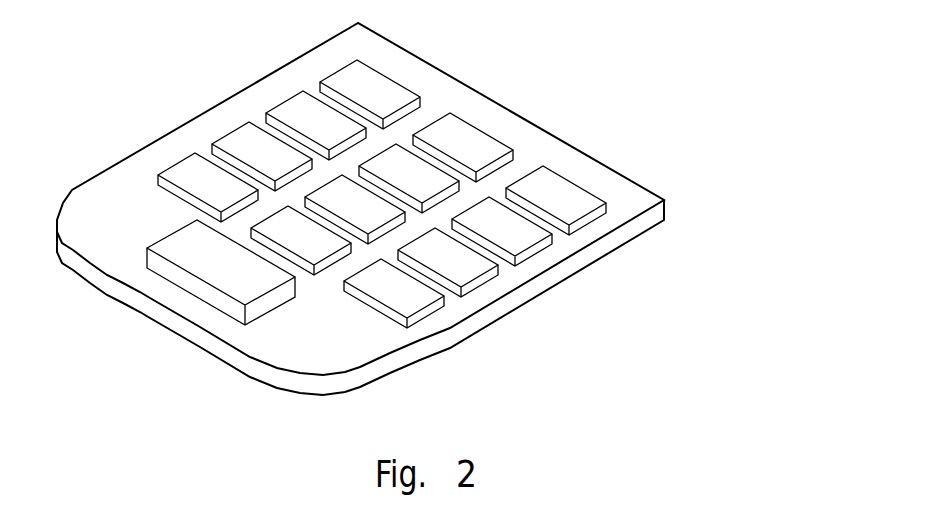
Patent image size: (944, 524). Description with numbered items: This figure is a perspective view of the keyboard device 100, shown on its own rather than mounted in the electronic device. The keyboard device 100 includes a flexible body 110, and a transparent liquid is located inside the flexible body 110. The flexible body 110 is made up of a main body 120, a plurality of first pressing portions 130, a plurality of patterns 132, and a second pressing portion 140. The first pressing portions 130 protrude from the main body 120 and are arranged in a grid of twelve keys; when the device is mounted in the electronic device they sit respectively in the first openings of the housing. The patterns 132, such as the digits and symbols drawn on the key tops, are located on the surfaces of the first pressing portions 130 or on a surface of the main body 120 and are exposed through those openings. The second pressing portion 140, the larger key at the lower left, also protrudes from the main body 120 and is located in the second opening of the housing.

The keyboard device 100 is at (162, 31).
The flexible body 110 is at (763, 180).
The main body 120 is at (577, 236).
The first pressing portions 130 is at (580, 198).
The patterns 132 is at (561, 193).
The second pressing portion 140 is at (257, 275).